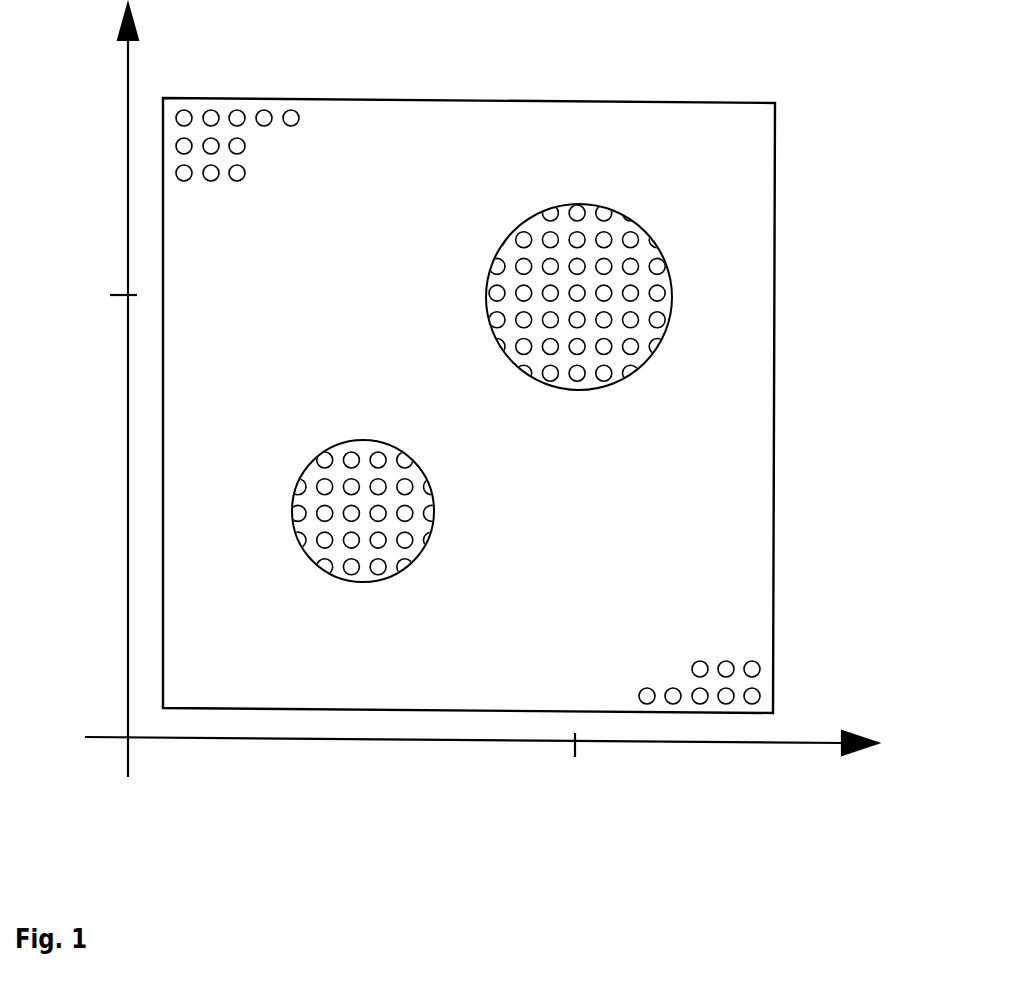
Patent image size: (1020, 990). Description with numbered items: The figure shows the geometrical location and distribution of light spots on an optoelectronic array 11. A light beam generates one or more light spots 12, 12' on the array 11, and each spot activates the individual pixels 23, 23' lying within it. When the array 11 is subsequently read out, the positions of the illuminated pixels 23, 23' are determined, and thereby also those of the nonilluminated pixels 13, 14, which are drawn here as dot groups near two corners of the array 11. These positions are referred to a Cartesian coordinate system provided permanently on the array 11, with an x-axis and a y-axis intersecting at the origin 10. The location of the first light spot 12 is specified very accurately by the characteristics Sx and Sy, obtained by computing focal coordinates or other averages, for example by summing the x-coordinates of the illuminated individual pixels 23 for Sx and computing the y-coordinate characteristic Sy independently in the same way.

The origin 10 is at (125, 742).
The optoelectronic array 11 is at (401, 100).
The first light spot 12 is at (610, 266).
The light spot 12' is at (402, 477).
The nonilluminated pixels 13 is at (187, 110).
The nonilluminated pixels 14 is at (759, 693).
The illuminated individual pixels 23 is at (679, 242).
The illuminated individual pixels 23' is at (455, 462).